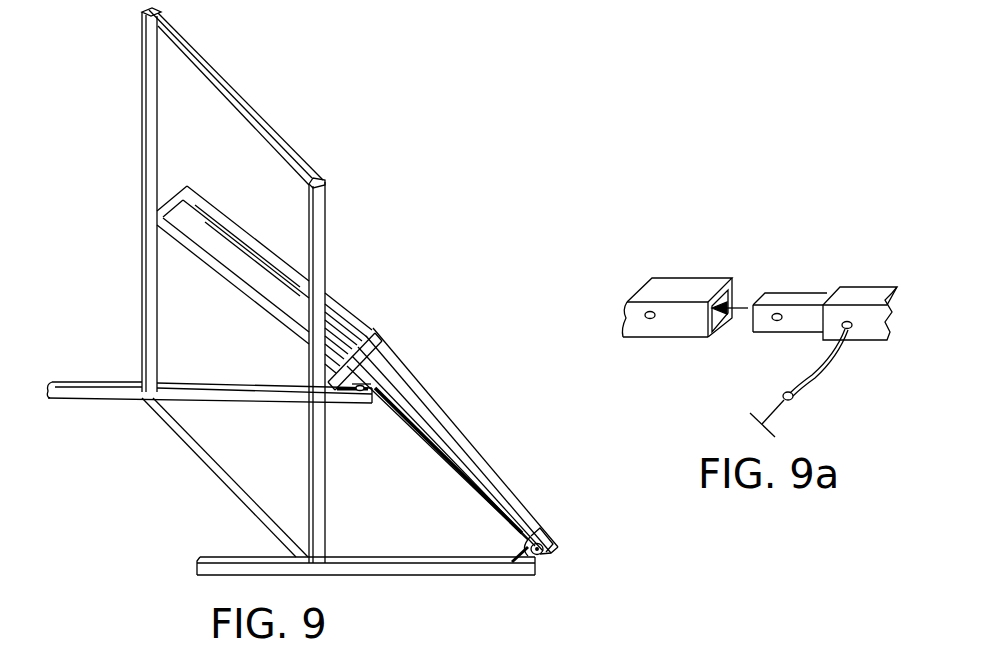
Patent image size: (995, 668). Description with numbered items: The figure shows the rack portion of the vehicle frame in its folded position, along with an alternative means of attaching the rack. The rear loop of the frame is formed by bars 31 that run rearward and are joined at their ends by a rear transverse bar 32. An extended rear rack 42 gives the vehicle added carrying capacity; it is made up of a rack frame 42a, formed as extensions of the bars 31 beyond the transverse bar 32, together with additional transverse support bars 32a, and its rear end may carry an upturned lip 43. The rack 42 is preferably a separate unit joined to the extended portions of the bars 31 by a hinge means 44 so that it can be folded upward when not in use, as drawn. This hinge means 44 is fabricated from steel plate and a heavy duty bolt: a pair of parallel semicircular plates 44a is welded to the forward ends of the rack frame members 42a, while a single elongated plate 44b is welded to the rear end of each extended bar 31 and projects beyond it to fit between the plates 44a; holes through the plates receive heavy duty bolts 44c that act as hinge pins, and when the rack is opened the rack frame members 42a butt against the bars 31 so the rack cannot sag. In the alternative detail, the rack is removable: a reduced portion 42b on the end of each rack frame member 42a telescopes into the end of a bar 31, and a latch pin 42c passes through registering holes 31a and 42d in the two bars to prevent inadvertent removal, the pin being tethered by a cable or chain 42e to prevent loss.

In FIG. 9, the bars 31 is at (240, 382).
In FIG. 9A, the bars 31 is at (677, 311).
In FIG. 9A, the hole 31a is at (652, 320).
In FIG. 9, the rear transverse bar 32 is at (252, 514).
In FIG. 9, the additional transverse support bars 32a is at (398, 412).
In FIG. 9, the extended rear rack 42 is at (357, 370).
In FIG. 9, the rack frame 42a is at (300, 284).
In FIG. 9A, the rack frame 42a is at (878, 342).
In FIG. 9A, the reduced portion 42b is at (783, 314).
In FIG. 9A, the latch pin 42c is at (778, 408).
In FIG. 9A, the hole 42d is at (777, 322).
In FIG. 9A, the cable or chain 42e is at (807, 383).
In FIG. 9, the upturned lip 43 is at (368, 324).
In FIG. 9, the hinge means 44 is at (486, 505).
In FIG. 9, the semicircular plates 44a is at (548, 540).
In FIG. 9, the elongated plate 44b is at (513, 558).
In FIG. 9, the heavy duty bolt 44c is at (545, 552).